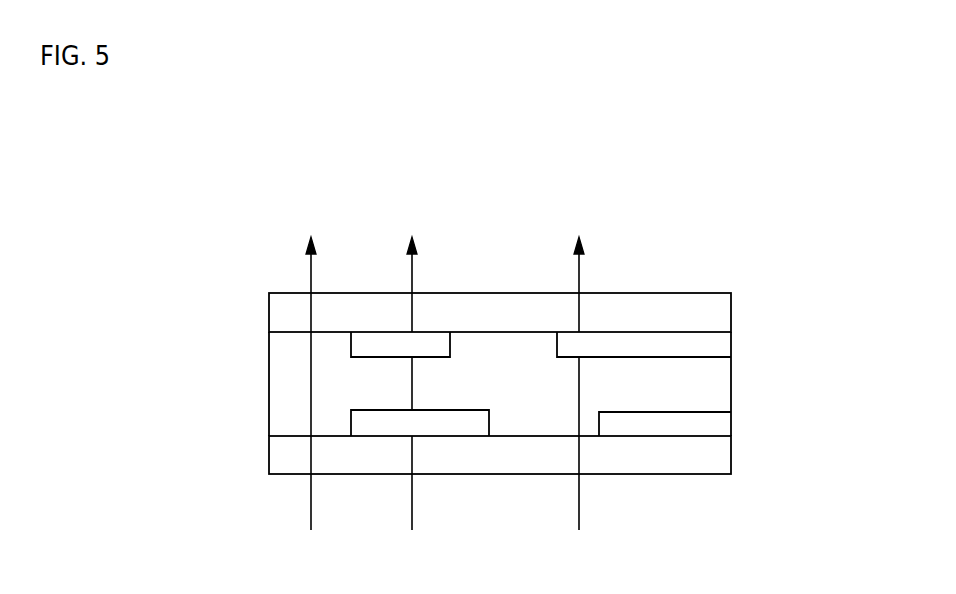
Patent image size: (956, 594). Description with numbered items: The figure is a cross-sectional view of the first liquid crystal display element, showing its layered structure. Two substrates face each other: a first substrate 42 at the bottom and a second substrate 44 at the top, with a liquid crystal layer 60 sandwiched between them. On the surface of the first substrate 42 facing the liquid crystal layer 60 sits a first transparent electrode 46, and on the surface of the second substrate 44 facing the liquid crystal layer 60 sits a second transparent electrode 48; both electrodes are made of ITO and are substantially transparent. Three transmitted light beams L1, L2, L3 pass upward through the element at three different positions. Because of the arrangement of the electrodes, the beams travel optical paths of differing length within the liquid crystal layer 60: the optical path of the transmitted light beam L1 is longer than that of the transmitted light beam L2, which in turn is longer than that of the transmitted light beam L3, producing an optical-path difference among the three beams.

The first substrate 42 is at (723, 460).
The second substrate 44 is at (723, 314).
The first transparent electrode 46 is at (723, 426).
The second transparent electrode 48 is at (723, 349).
The liquid crystal layer 60 is at (723, 387).
The transmitted light beam L1 is at (309, 400).
The transmitted light beam L2 is at (410, 400).
The transmitted light beam L3 is at (578, 400).